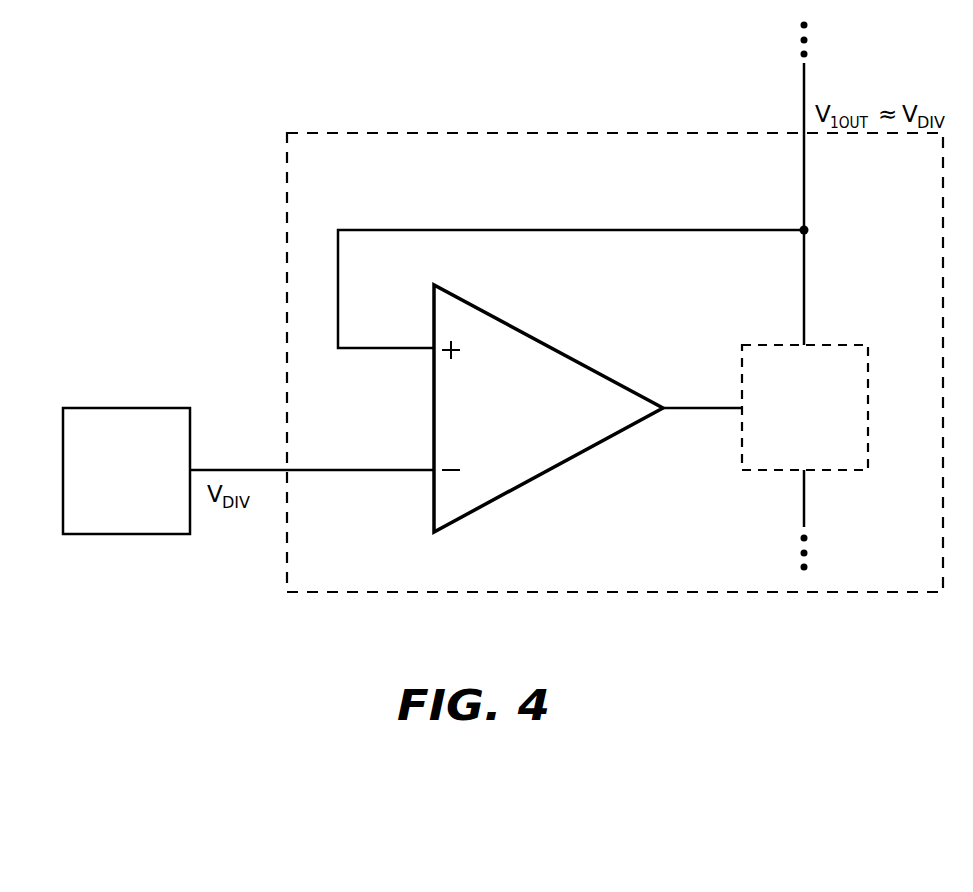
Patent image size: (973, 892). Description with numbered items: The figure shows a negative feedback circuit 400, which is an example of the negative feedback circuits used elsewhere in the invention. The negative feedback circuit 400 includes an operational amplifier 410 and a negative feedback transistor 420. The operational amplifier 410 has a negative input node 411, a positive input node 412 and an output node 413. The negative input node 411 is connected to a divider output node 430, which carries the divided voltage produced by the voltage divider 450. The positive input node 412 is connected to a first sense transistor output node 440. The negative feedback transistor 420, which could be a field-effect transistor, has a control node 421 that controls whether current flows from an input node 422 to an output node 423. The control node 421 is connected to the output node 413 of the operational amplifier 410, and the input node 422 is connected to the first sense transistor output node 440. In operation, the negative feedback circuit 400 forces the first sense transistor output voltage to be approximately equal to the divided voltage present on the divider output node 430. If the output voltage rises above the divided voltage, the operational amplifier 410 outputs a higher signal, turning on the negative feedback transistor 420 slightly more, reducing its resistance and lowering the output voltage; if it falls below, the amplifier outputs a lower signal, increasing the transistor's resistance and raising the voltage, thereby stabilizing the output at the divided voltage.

The negative feedback circuit 400 is at (617, 179).
The operational amplifier 410 is at (528, 442).
The negative input node 411 is at (340, 468).
The positive input node 412 is at (368, 347).
The output node 413 is at (693, 407).
The negative feedback transistor 420 is at (820, 454).
The control node 421 is at (702, 412).
The input node 422 is at (806, 322).
The output node 423 is at (806, 483).
The divider output node 430 is at (207, 468).
The first sense transistor output node 440 is at (806, 88).
The voltage divider 450 is at (142, 506).